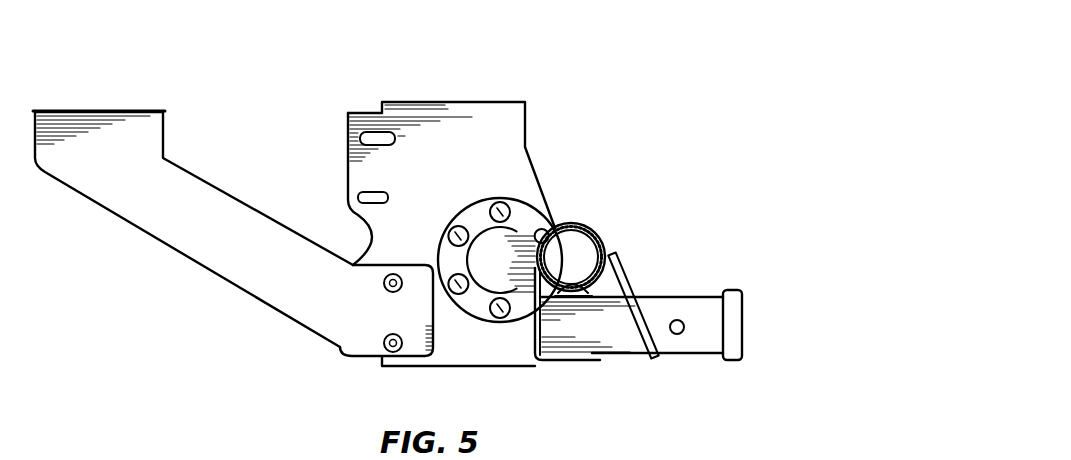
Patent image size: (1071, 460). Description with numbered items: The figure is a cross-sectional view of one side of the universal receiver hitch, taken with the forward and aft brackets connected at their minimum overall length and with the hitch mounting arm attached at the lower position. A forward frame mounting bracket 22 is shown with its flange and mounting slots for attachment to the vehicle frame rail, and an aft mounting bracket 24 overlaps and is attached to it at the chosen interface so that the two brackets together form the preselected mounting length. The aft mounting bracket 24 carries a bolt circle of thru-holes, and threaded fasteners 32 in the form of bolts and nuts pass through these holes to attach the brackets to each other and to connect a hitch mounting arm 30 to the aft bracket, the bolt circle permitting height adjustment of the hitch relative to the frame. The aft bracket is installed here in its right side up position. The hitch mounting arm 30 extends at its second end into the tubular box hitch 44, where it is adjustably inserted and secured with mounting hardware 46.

The forward frame mounting bracket 22 is at (118, 110).
The aft mounting bracket 24 is at (440, 101).
The hitch mounting arm 30 is at (603, 240).
The threaded fasteners 32 is at (507, 203).
The box hitch 44 is at (658, 374).
The mounting hardware 46 is at (348, 343).